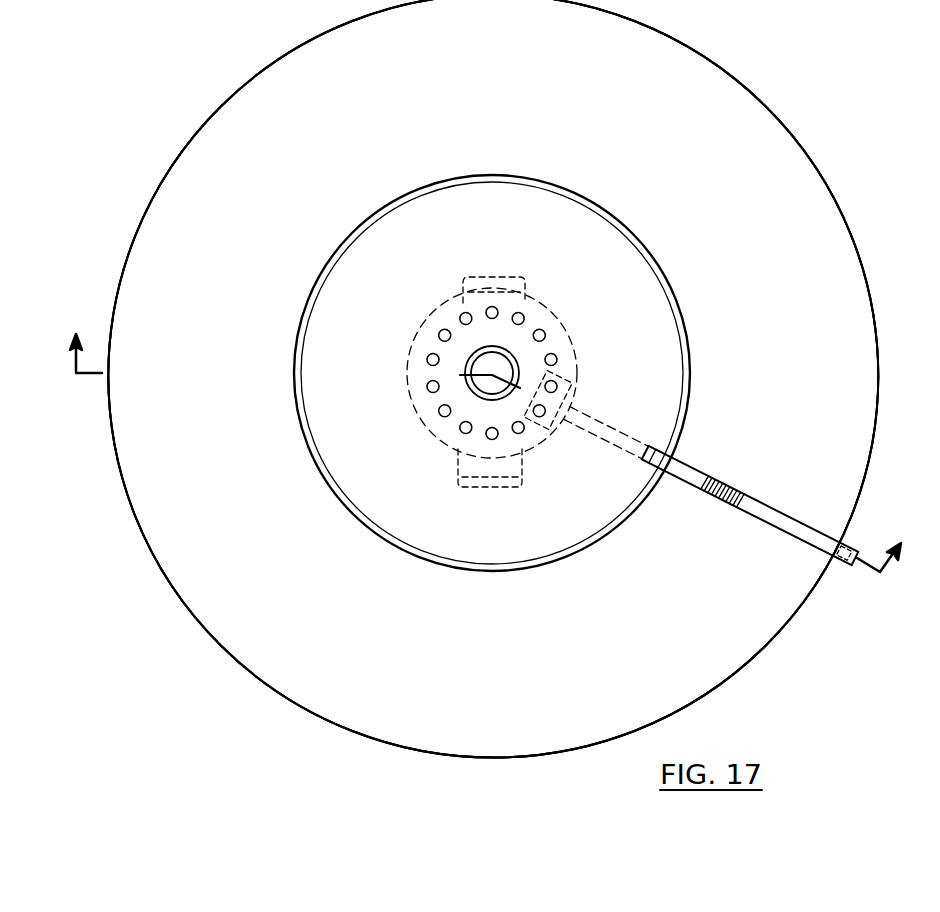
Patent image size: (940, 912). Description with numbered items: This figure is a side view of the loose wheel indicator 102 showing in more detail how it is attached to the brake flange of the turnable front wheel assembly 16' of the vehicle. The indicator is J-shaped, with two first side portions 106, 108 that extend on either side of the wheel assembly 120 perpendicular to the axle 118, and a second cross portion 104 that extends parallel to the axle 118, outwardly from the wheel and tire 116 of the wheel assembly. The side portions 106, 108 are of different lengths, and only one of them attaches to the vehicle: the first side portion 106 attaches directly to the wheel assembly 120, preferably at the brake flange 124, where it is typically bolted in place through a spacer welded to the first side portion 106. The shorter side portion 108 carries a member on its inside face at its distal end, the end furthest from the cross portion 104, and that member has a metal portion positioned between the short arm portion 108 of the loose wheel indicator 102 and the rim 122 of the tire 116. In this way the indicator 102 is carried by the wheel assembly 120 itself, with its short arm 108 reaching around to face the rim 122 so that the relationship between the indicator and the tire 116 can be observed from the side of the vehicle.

The loose wheel indicator 102 is at (750, 510).
The cross portion 104 is at (846, 562).
The first side portion 106 is at (614, 426).
The short side portion 108 is at (770, 526).
The tire 116 is at (376, 699).
The axle 118 is at (485, 361).
The wheel assembly 120 is at (236, 734).
The rim 122 is at (378, 533).
The brake flange 124 is at (562, 336).
The turnable front wheel assembly 16' is at (493, 379).